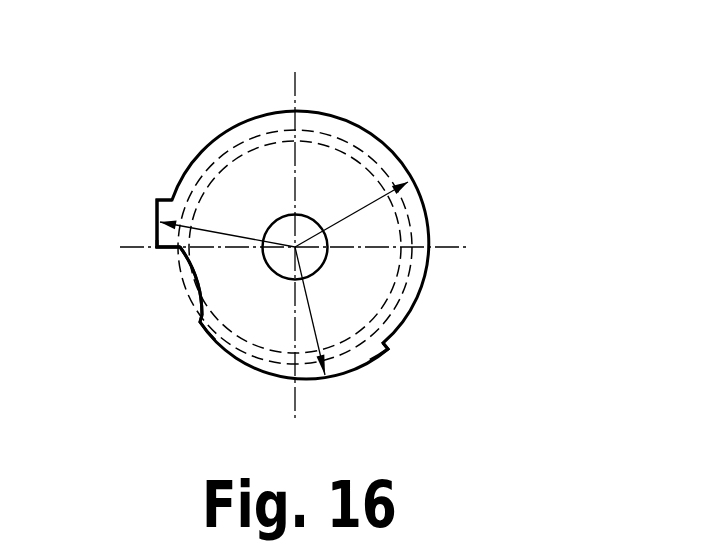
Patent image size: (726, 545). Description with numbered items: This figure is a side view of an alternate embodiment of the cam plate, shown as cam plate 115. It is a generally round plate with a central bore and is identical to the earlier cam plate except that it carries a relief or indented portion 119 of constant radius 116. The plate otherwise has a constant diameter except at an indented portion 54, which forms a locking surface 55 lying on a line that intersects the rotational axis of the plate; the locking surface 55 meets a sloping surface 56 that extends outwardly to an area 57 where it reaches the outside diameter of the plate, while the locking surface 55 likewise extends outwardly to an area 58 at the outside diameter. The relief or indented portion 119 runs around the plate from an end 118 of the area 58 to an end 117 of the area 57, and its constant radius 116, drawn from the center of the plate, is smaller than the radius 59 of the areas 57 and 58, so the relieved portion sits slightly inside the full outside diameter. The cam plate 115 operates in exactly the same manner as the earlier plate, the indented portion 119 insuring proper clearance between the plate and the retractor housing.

The cam plate 115 is at (462, 112).
The relief or indented portion 119 is at (330, 118).
The radius 116 is at (367, 202).
The radius 59 is at (218, 230).
The area 58 is at (158, 208).
The end 118 is at (170, 199).
The locking surface 55 is at (167, 249).
The indented portion 54 is at (185, 300).
The sloping surface 56 is at (203, 333).
The area 57 is at (255, 378).
The end 117 is at (390, 347).